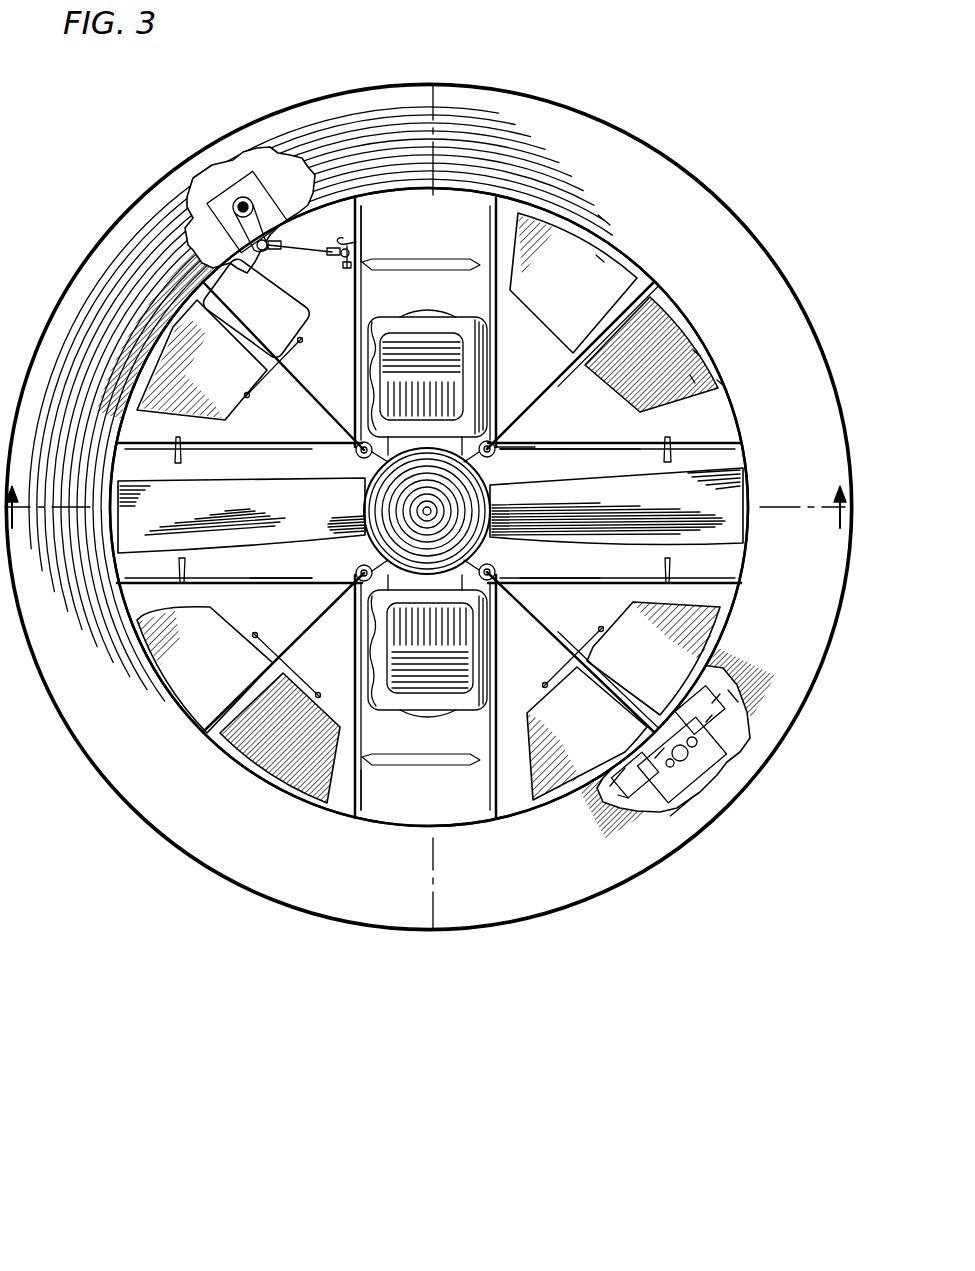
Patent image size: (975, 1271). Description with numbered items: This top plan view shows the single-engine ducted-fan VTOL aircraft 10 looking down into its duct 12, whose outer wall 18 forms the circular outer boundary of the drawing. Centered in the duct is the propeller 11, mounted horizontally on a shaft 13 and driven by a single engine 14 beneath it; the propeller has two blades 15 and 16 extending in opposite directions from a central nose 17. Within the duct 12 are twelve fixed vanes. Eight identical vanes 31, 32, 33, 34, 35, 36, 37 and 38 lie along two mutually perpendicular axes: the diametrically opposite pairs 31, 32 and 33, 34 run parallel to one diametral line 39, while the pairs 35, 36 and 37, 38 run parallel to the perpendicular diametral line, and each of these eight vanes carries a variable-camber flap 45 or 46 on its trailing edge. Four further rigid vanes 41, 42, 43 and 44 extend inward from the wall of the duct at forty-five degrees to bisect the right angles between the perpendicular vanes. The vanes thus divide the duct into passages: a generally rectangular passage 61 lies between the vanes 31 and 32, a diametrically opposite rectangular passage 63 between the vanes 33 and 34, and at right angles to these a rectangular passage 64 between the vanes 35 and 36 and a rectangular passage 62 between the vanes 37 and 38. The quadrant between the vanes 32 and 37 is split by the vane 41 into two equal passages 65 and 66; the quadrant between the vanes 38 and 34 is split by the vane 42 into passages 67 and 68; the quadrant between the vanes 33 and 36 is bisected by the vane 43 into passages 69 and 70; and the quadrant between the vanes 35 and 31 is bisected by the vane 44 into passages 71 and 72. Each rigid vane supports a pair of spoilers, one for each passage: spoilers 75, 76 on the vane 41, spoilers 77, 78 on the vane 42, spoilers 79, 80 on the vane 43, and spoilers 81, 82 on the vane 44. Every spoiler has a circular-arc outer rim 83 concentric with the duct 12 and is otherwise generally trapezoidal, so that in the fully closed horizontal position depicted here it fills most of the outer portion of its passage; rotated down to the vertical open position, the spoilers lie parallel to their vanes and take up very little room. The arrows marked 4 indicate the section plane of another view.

The section line 4- 4 is at (846, 500).
The ducted-fan VTOL aircraft 10 is at (142, 170).
The propeller 11 is at (352, 474).
The duct 12 is at (742, 390).
The shaft 13 is at (422, 511).
The engine 14 is at (432, 312).
The blade 15 is at (230, 509).
The blade 16 is at (627, 509).
The nose 17 is at (440, 500).
The duct outer wall 18 is at (588, 130).
The fixed vane 31 is at (360, 236).
The fixed vane 32 is at (489, 244).
The fixed vane 33 is at (366, 788).
The fixed vane 34 is at (488, 786).
The fixed vane 35 is at (228, 440).
The fixed vane 36 is at (240, 584).
The fixed vane 37 is at (614, 442).
The fixed vane 38 is at (574, 580).
The diametral line 39 is at (433, 82).
The rigid vane 41 is at (548, 404).
The rigid vane 42 is at (560, 632).
The rigid vane 43 is at (306, 640).
The rigid vane 44 is at (298, 392).
The variable-camber flap 45 is at (537, 330).
The variable-camber flap 46 is at (362, 214).
The rectangular passage 61 is at (392, 302).
The rectangular passage 62 is at (533, 475).
The rectangular passage 63 is at (416, 802).
The rectangular passage 64 is at (268, 577).
The passage 65 is at (503, 367).
The passage 66 is at (578, 427).
The passage 67 is at (563, 622).
The passage 68 is at (516, 673).
The passage 69 is at (313, 669).
The passage 70 is at (245, 612).
The passage 71 is at (270, 434).
The passage 72 is at (310, 302).
The spoiler 75 is at (551, 292).
The spoiler 76 is at (670, 345).
The spoiler 77 is at (621, 682).
The spoiler 78 is at (553, 747).
The spoiler 79 is at (240, 750).
The spoiler 80 is at (200, 690).
The spoiler 81 is at (186, 387).
The spoiler 82 is at (246, 317).
The circular-arc outer rim 83 is at (598, 262).